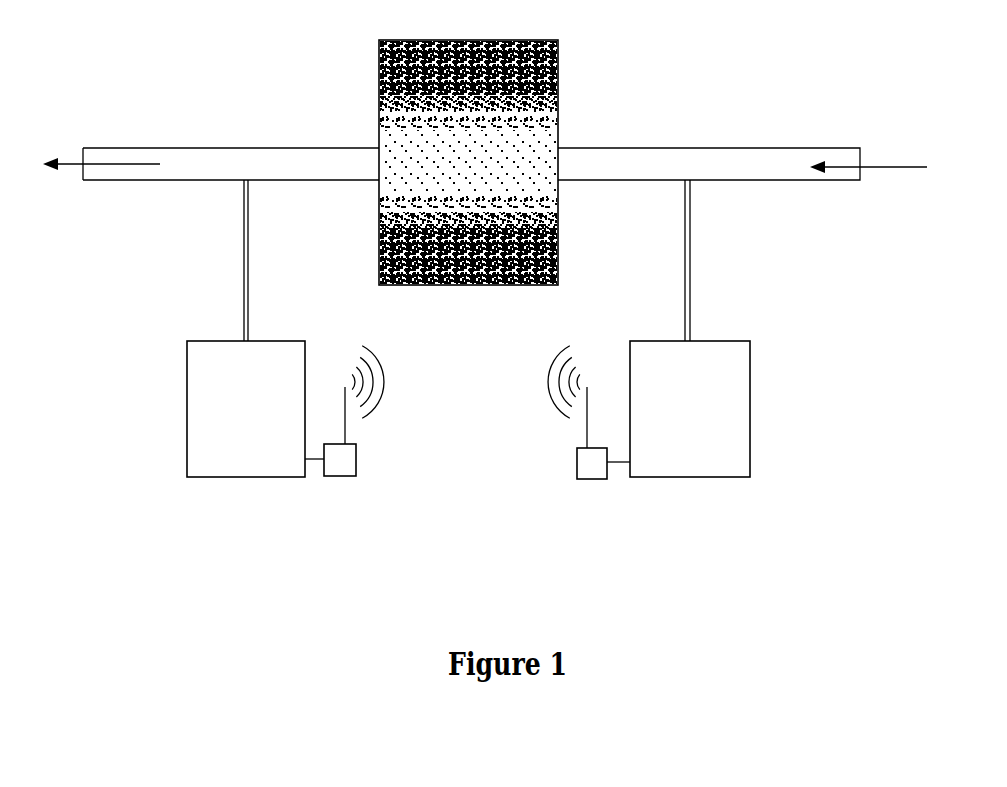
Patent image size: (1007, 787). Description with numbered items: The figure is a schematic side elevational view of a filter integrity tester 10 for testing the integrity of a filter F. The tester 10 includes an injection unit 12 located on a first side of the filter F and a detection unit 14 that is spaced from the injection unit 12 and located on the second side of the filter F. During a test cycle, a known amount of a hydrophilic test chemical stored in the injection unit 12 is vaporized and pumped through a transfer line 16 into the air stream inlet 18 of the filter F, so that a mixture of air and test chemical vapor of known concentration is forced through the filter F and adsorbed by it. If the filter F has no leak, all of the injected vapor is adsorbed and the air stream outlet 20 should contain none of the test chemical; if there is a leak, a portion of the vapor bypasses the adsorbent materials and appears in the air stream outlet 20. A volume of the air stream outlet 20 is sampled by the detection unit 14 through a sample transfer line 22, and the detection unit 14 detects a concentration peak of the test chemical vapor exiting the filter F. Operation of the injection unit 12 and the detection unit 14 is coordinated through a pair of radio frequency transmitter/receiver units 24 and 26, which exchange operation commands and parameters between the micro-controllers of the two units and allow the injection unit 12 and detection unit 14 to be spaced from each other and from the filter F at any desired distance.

The filter integrity tester 10 is at (723, 98).
The injection unit 12 is at (723, 410).
The detection unit 14 is at (197, 405).
The transfer line 16 is at (690, 267).
The air stream inlet 18 is at (683, 163).
The air stream outlet 20 is at (222, 160).
The sample transfer line 22 is at (245, 268).
The radio frequency transmitter/receiver unit 24 is at (583, 465).
The radio frequency transmitter/receiver unit 26 is at (337, 463).
The filter F is at (520, 118).